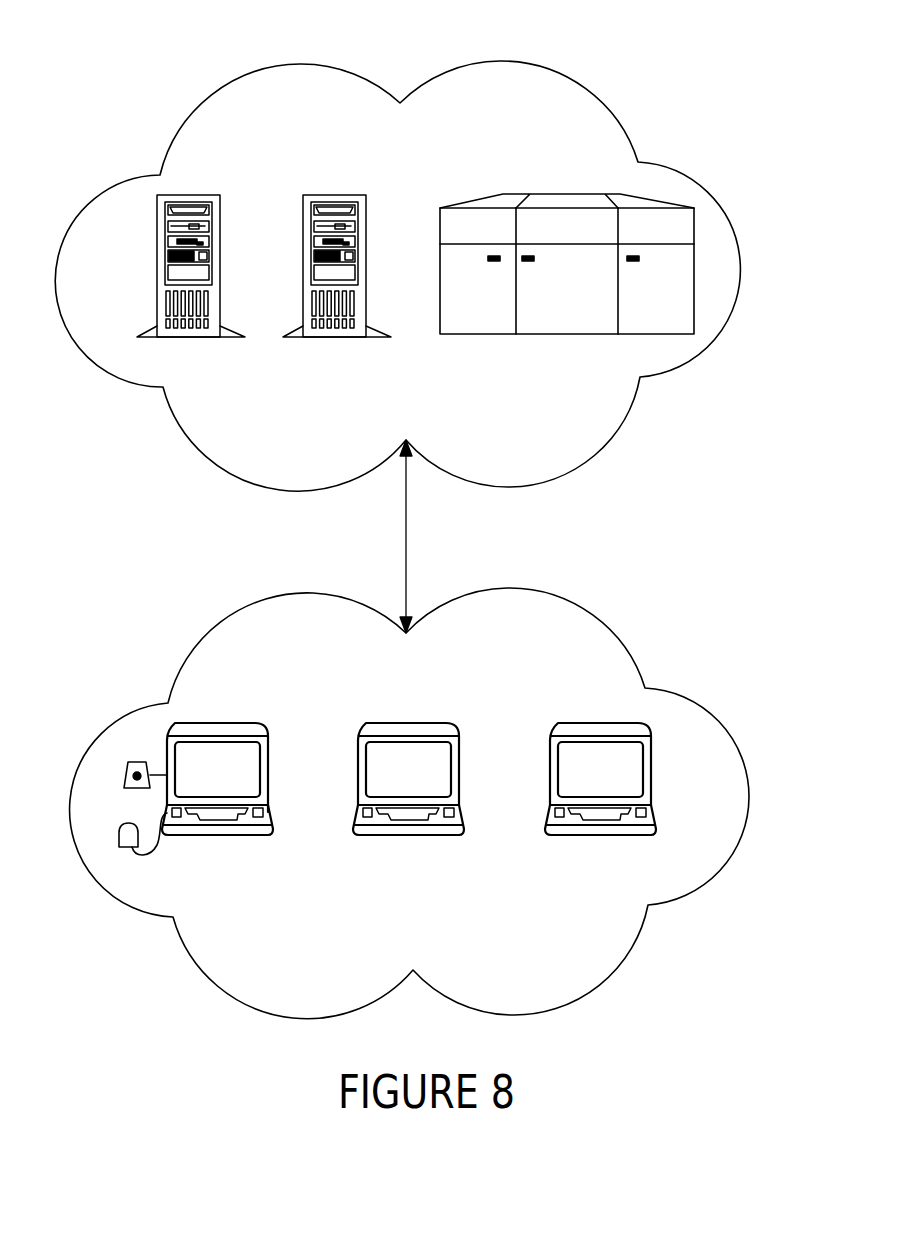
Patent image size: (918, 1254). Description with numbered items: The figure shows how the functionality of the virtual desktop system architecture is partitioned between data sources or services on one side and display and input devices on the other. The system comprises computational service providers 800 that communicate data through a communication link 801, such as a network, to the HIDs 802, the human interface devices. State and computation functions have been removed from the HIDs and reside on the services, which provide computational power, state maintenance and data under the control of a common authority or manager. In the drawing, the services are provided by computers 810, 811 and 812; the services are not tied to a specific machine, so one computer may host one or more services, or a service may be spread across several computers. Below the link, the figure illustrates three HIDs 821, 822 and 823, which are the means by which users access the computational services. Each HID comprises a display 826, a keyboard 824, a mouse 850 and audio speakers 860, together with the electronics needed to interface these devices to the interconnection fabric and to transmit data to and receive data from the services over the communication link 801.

The computational service providers 800 is at (762, 272).
The communication link 801 is at (424, 532).
The HIDs 802 is at (770, 800).
The computer 810 is at (191, 338).
The computer 811 is at (333, 339).
The computer 812 is at (556, 335).
The HID 821 is at (217, 808).
The HID 822 is at (403, 835).
The HID 823 is at (594, 835).
The keyboard 824 is at (291, 804).
The display 826 is at (217, 769).
The mouse 850 is at (121, 826).
The audio speakers 860 is at (136, 760).